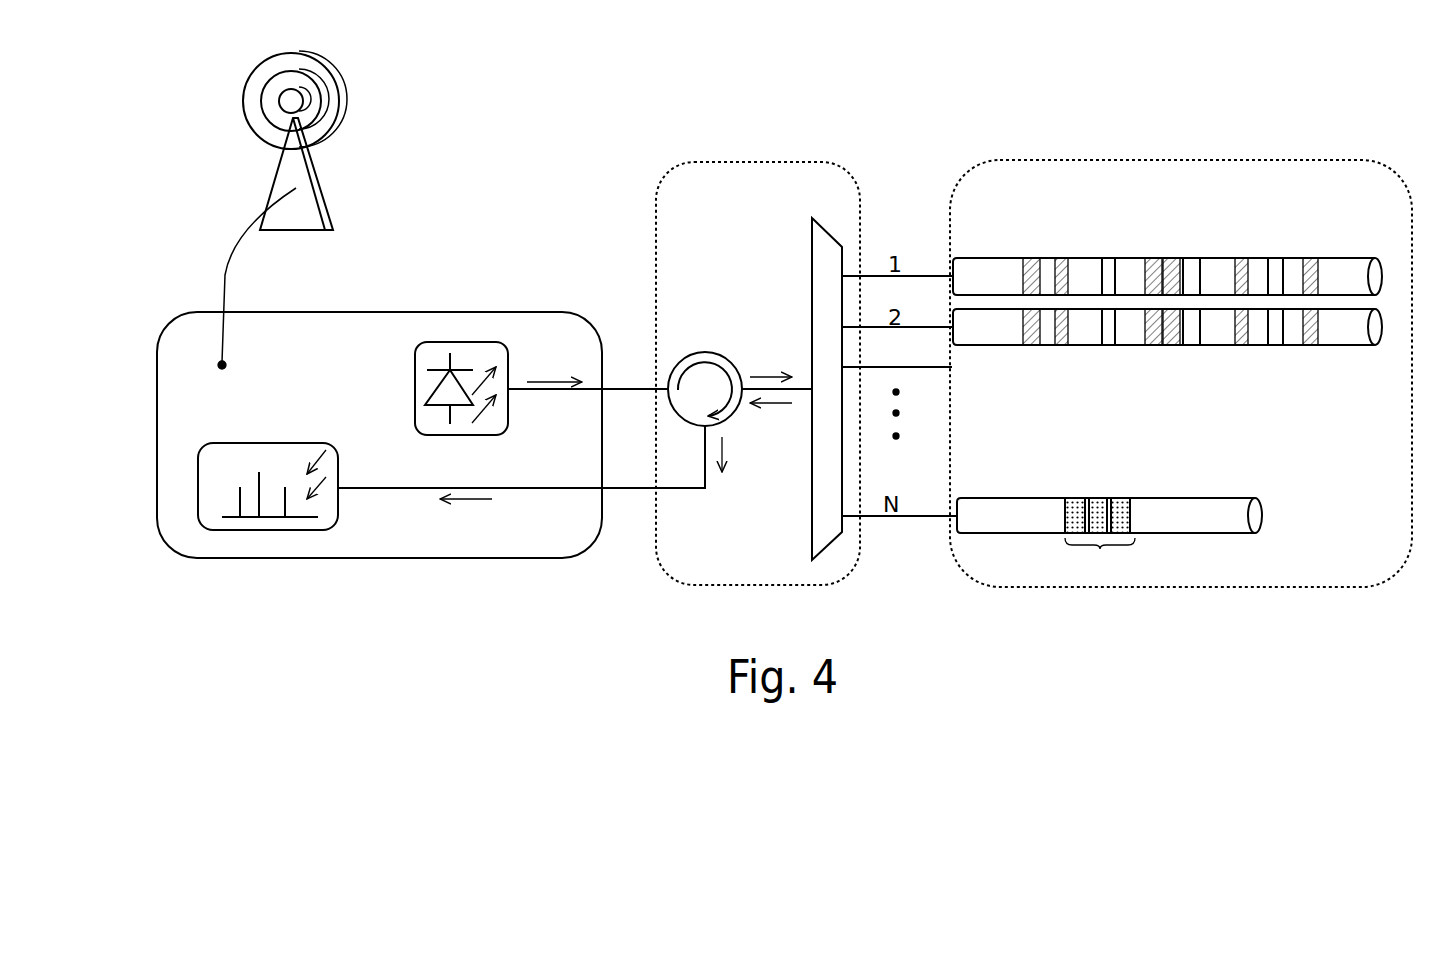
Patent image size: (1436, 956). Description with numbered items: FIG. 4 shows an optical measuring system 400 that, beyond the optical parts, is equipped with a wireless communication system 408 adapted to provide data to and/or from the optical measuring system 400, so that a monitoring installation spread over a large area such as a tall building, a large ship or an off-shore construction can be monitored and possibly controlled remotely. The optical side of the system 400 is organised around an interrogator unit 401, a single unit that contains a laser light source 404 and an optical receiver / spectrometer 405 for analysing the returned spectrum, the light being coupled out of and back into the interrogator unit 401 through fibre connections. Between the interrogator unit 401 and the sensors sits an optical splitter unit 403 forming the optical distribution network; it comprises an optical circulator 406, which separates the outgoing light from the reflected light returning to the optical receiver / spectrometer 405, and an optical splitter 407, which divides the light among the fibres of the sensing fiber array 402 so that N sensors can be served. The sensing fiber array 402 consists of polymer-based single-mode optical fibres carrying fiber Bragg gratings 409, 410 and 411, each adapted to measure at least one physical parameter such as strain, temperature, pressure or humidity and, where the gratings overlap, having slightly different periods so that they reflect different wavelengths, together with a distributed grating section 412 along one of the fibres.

The optical measuring system 400 is at (658, 74).
The interrogator unit 401 is at (214, 354).
The sensing fiber array 402 is at (1030, 196).
The optical splitter unit 403 is at (714, 197).
The laser light source 404 is at (472, 352).
The optical receiver / spectrometer 405 is at (325, 515).
The optical circulator 406 is at (700, 372).
The optical splitter 407 is at (816, 534).
The wireless communication system 408 is at (333, 170).
The fiber Bragg grating 409 is at (1028, 267).
The fiber Bragg grating 410 is at (1062, 340).
The fiber Bragg grating 411 is at (1112, 340).
The distributed grating section 412 is at (1100, 549).